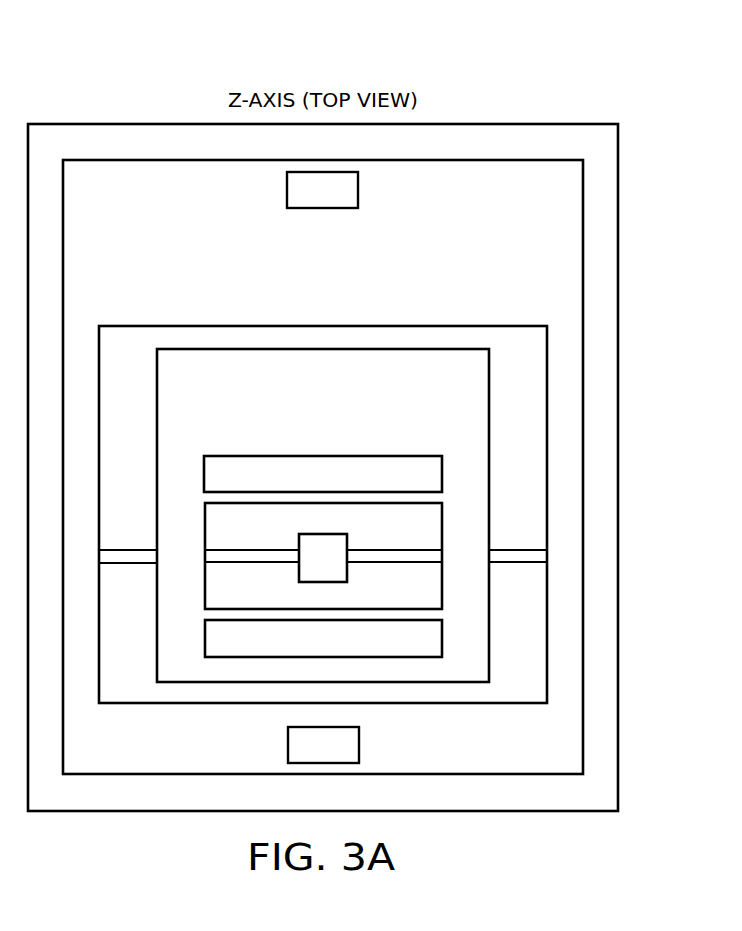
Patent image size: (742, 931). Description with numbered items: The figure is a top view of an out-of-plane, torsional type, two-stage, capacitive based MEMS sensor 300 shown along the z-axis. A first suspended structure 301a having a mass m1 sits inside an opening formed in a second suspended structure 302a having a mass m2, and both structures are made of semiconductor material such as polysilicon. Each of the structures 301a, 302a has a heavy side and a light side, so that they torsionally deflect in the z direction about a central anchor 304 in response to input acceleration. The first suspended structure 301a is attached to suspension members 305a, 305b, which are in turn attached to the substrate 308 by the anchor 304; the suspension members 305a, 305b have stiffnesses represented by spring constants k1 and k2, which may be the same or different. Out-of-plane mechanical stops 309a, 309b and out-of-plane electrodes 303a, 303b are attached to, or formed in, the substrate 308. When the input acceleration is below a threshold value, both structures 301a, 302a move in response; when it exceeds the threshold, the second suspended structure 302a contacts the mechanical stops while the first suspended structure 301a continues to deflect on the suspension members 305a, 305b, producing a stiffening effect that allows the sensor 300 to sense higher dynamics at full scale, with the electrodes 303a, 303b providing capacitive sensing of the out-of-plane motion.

The two-stage MEMS sensor 300 is at (138, 58).
The substrate 308 is at (506, 114).
The second suspended structure 302a is at (553, 225).
The first suspended structure 301a is at (458, 412).
The out-of-plane mechanical stop 309a is at (287, 188).
The out-of-plane mechanical stop 309b is at (359, 745).
The out-of-plane electrode 303a is at (252, 455).
The out-of-plane electrode 303b is at (257, 658).
The anchor 304 is at (298, 541).
The suspension member 305a is at (392, 563).
The suspension member 305b is at (518, 563).